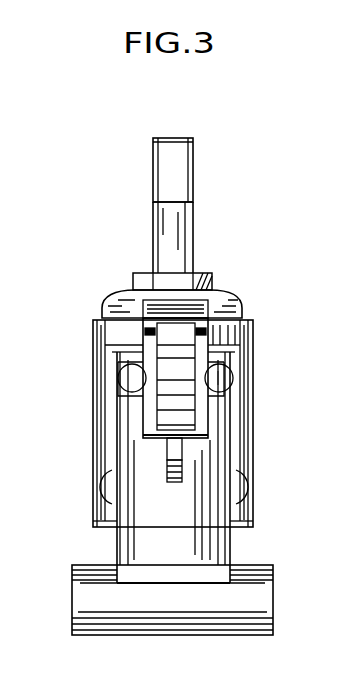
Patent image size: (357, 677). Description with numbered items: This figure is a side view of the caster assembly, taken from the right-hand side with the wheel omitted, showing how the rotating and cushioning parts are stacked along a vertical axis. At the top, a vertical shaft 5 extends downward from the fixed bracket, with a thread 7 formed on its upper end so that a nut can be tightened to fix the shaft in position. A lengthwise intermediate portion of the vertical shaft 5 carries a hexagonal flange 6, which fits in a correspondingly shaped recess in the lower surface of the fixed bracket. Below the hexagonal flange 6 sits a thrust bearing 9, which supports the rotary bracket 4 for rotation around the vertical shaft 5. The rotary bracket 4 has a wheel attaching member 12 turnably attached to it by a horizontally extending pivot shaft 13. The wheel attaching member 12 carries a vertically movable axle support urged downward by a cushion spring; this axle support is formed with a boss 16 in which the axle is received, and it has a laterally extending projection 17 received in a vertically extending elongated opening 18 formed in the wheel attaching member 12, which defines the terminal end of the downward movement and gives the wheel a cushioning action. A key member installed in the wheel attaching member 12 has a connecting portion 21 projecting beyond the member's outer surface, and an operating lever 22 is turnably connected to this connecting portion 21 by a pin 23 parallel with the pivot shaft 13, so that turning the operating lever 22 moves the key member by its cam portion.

The rotary bracket 4 is at (254, 385).
The vertical shaft 5 is at (194, 221).
The hexagonal flange 6 is at (209, 278).
The thread 7 is at (193, 170).
The thrust bearing 9 is at (236, 298).
The wheel attaching member 12 is at (231, 547).
The pivot shaft 13 is at (246, 485).
The boss 16 is at (262, 605).
The laterally extending projection 17 is at (166, 478).
The vertically extending elongated opening 18 is at (170, 446).
The connecting portion 21 is at (138, 384).
The operating lever 22 is at (150, 412).
The pin 23 is at (125, 368).